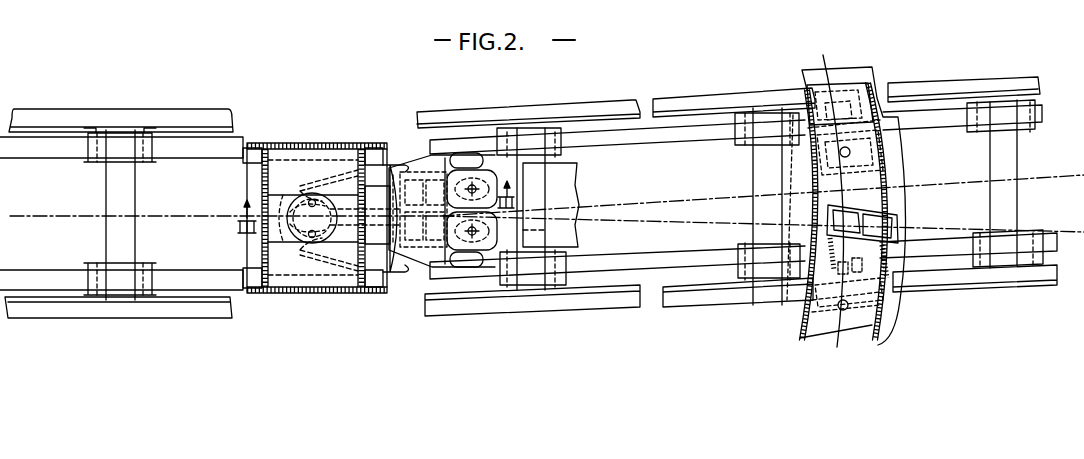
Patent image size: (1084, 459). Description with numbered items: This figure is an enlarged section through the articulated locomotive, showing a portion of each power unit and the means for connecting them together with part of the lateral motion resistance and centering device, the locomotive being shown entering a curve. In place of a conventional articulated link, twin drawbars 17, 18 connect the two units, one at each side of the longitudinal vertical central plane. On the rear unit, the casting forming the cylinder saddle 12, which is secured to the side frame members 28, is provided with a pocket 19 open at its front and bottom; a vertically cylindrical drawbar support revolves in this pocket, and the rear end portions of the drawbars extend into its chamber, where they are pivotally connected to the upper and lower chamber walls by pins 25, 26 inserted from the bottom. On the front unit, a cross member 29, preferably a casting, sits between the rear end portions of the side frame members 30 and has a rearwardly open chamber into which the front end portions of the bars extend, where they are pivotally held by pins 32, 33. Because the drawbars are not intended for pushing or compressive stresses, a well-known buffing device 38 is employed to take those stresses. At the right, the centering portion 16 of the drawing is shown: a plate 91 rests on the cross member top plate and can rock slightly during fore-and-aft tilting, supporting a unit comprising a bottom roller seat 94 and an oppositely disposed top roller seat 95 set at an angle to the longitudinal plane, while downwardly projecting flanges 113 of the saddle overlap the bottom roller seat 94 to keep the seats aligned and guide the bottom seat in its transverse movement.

The cylinder saddle 12 is at (262, 180).
The swing frame 16 is at (868, 75).
The drawbar 17 is at (385, 186).
The drawbar 18 is at (362, 290).
The pocket 19 is at (344, 183).
The pin 25 is at (305, 184).
The pin 26 is at (305, 254).
The side frame member 28 is at (194, 158).
The cross member 29 is at (493, 165).
The side frame member 30 is at (630, 142).
The pin 32 is at (517, 215).
The pin 33 is at (522, 241).
The buffing device 38 is at (417, 258).
The plate 91 is at (835, 70).
The bottom roller seat 94 is at (817, 92).
The top roller seat 95 is at (888, 132).
The flange 113 is at (890, 170).